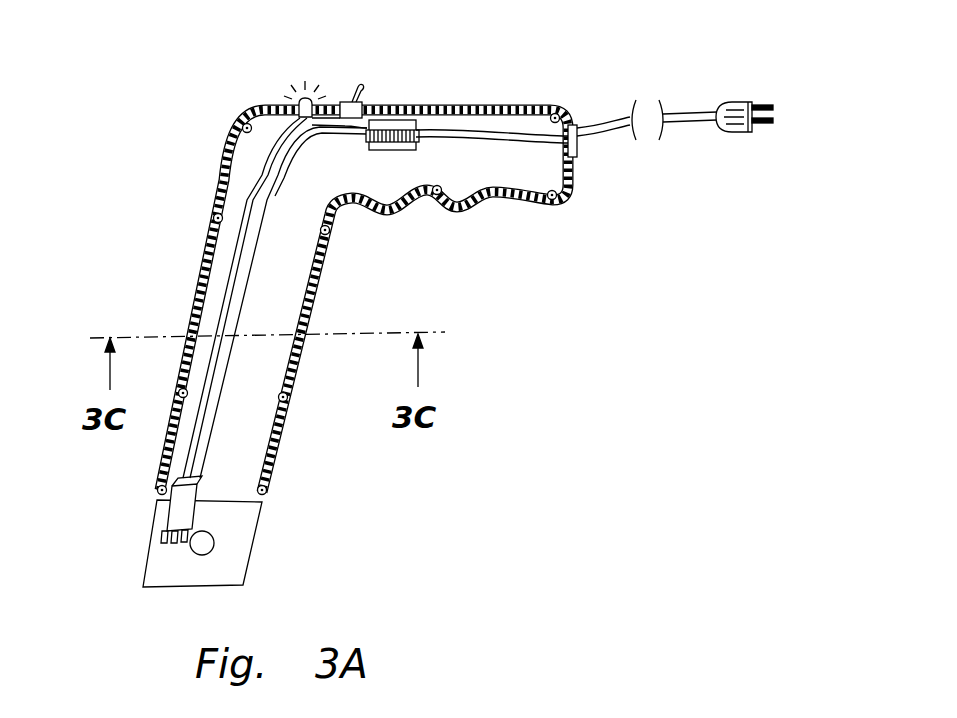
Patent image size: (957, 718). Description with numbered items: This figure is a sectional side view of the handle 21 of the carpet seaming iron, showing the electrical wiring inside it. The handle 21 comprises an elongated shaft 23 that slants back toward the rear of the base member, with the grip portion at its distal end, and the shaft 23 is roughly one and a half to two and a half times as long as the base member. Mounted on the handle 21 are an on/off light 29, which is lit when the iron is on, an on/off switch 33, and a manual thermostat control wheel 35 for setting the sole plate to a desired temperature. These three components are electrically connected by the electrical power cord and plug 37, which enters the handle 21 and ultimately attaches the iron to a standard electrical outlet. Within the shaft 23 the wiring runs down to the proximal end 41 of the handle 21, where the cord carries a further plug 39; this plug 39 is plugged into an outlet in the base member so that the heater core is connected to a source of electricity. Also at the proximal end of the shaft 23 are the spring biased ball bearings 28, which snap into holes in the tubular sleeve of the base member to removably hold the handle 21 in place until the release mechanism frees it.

The handle 21 is at (428, 312).
The elongated shaft 23 is at (322, 282).
The spring biased ball bearings 28 is at (214, 543).
The on/off light 29 is at (298, 98).
The on/off switch 33 is at (365, 100).
The manual thermostat control wheel 35 is at (397, 150).
The electrical power cord and plug 37 is at (602, 137).
The further plug 39 is at (178, 505).
The proximal end 41 is at (263, 510).